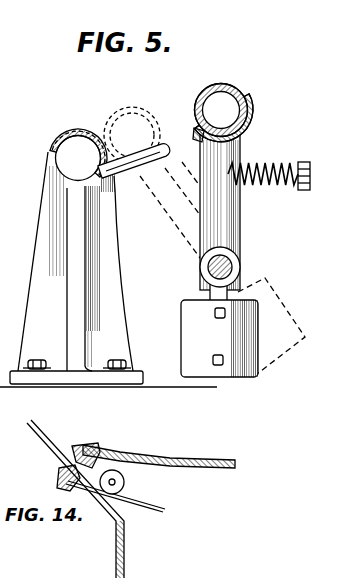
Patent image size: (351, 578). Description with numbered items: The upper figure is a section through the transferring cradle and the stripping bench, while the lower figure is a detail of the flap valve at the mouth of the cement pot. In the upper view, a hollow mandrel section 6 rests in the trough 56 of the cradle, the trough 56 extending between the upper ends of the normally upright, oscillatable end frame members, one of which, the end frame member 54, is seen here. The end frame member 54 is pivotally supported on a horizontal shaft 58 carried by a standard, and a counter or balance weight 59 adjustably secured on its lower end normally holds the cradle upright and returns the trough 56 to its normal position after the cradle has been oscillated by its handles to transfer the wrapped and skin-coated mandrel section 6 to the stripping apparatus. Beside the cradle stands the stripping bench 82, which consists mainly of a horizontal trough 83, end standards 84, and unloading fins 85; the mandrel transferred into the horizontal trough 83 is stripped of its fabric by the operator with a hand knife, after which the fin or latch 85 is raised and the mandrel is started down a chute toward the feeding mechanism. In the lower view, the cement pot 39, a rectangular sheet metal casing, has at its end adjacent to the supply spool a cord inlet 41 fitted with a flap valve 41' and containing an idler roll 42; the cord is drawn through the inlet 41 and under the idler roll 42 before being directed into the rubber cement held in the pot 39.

In FIG. 5, the mandrel section 6 is at (236, 91).
In FIG. 5, the trough 56 is at (250, 132).
In FIG. 5, the end frame member 54 is at (232, 222).
In FIG. 5, the horizontal shaft 58 is at (233, 266).
In FIG. 5, the balance weight 59 is at (247, 338).
In FIG. 5, the stripping bench 82 is at (33, 188).
In FIG. 5, the horizontal trough 83 is at (49, 149).
In FIG. 5, the end standard 84 is at (105, 288).
In FIG. 5, the unloading fin 85 is at (136, 170).
In FIG. 14, the cement pot 39 is at (103, 569).
In FIG. 14, the cord inlet 41 is at (103, 446).
In FIG. 14, the flap valve 41' is at (73, 452).
In FIG. 14, the idler roll 42 is at (124, 482).